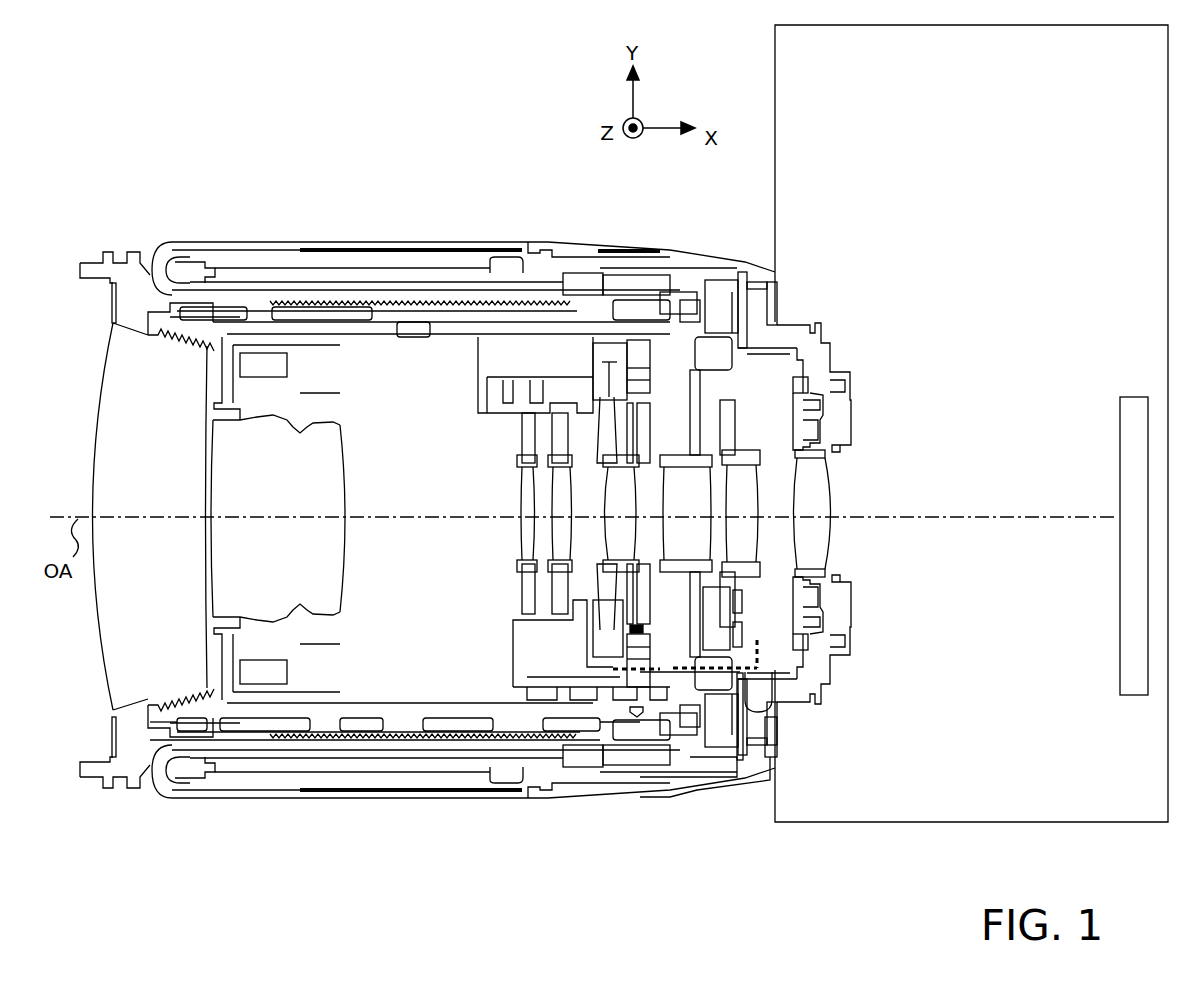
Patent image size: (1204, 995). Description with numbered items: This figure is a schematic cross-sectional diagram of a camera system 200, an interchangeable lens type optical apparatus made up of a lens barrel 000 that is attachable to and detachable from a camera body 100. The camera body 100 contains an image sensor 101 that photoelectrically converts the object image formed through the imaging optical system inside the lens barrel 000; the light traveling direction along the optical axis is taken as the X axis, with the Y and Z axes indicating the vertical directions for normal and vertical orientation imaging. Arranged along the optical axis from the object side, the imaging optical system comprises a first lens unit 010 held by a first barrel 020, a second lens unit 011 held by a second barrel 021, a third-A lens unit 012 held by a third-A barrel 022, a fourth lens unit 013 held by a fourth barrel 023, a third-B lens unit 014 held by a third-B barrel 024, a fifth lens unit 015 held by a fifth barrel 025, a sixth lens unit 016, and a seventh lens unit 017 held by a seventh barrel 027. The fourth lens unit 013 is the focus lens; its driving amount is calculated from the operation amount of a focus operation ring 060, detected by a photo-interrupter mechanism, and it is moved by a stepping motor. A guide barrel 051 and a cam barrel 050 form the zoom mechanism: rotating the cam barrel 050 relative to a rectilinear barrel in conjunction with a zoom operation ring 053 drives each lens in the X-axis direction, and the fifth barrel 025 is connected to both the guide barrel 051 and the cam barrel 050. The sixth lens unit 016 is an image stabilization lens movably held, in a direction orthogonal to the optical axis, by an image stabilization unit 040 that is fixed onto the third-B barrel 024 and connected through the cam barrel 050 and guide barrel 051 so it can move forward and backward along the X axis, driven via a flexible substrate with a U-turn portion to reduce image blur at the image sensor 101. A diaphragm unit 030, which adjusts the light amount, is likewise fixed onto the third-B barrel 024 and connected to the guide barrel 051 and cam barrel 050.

The lens barrel 000 is at (70, 827).
The first lens unit 010 is at (142, 360).
The second lens unit 011 is at (260, 433).
The 3A-th lens unit 012 is at (513, 413).
The fourth lens unit 013 is at (552, 387).
The 3B-th lens unit 014 is at (618, 463).
The fifth lens unit 015 is at (652, 387).
The sixth lens unit 016 is at (725, 455).
The seventh lens unit 017 is at (803, 500).
The first barrel 020 is at (168, 293).
The second barrel 021 is at (315, 420).
The 3A-th barrel 022 is at (486, 370).
The fourth barrel 023 is at (535, 407).
The 3B-th barrel 024 is at (617, 360).
The fifth barrel 025 is at (675, 478).
The seventh barrel 027 is at (779, 350).
The diaphragm unit 030 is at (630, 673).
The image stabilization unit 040 is at (722, 670).
The cam barrel 050 is at (288, 722).
The guide barrel 051 is at (240, 710).
The zoom operation ring 053 is at (338, 247).
The focus operation ring 060 is at (215, 252).
The camera body 100 is at (777, 827).
The image sensor 101 is at (1138, 425).
The camera system 200 is at (1169, 848).